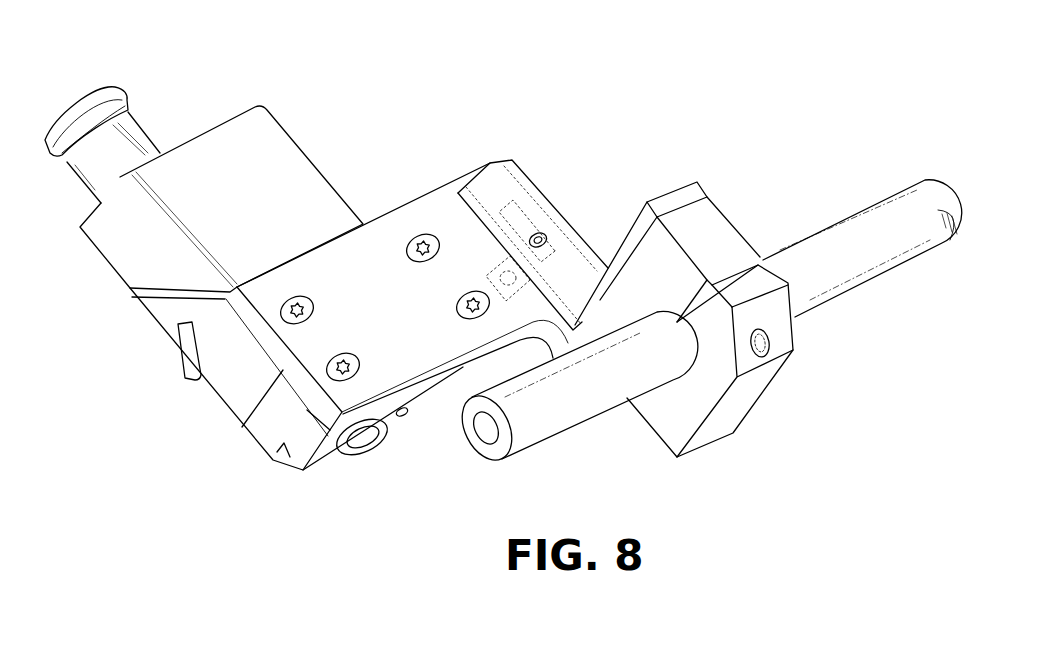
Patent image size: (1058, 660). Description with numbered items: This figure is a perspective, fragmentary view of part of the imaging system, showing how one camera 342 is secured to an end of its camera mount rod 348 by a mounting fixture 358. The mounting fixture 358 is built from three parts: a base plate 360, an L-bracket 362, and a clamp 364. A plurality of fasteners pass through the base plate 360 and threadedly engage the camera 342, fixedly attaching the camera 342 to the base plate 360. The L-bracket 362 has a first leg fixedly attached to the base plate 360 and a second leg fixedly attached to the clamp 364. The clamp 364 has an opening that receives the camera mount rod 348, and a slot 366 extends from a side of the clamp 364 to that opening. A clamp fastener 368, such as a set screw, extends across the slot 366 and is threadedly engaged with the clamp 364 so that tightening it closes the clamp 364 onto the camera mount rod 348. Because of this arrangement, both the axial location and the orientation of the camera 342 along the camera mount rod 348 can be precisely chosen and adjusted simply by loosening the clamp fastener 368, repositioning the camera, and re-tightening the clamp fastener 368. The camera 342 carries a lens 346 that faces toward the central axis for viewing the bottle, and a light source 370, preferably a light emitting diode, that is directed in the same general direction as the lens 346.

The camera 342 is at (253, 153).
The lens 346 is at (355, 450).
The camera mount rod 348 is at (870, 247).
The mounting fixture 358 is at (578, 177).
The base plate 360 is at (353, 262).
The L-bracket 362 is at (523, 187).
The clamp 364 is at (708, 228).
The slot 366 is at (740, 268).
The clamp fastener 368 is at (762, 357).
The light source 370 is at (405, 415).